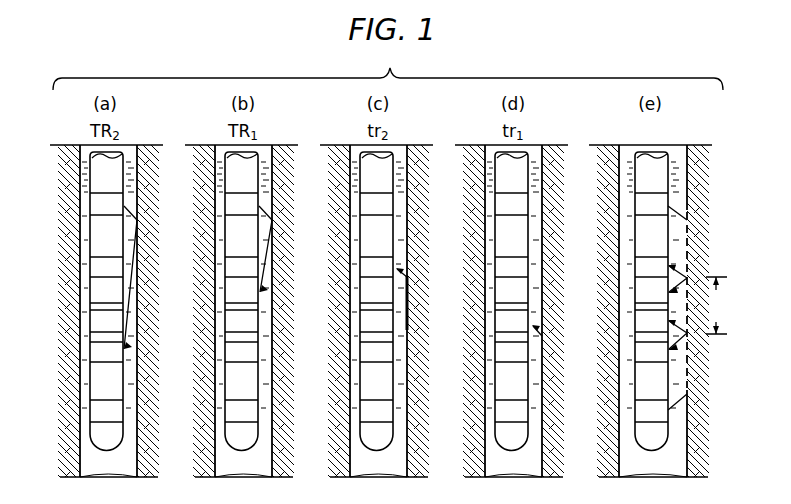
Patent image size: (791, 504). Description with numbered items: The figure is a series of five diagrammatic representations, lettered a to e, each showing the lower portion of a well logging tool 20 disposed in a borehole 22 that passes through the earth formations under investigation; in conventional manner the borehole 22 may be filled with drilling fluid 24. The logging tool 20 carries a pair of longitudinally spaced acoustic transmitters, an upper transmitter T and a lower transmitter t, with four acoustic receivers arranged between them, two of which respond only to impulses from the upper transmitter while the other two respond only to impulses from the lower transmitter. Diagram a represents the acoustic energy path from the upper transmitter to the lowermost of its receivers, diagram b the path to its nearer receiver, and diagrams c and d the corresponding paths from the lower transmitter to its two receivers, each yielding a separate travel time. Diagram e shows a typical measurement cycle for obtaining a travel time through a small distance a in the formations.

The well logging tool 20 is at (98, 182).
The borehole 22 is at (72, 449).
The drilling fluid 24 is at (118, 462).